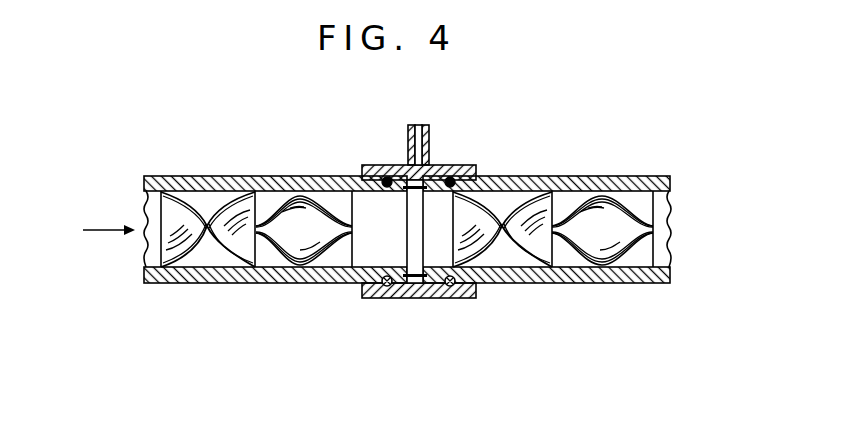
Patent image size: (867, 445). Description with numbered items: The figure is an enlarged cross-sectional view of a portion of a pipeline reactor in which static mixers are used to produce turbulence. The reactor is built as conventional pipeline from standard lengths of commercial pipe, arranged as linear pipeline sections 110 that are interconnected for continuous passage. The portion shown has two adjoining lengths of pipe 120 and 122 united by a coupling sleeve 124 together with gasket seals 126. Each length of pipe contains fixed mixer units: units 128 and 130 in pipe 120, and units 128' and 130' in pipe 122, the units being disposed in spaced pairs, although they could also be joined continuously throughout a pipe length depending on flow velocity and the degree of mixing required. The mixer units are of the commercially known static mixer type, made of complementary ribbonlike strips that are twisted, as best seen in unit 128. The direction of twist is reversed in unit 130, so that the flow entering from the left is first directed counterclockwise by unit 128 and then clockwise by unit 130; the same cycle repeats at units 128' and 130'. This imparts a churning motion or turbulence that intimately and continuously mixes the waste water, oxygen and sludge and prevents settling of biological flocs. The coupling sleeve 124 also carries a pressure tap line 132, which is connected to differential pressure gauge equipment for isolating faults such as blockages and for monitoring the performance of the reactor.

The linear pipeline section 110 is at (210, 290).
The length of pipe 120 is at (270, 143).
The length of pipe 122 is at (653, 158).
The coupling sleeve 124 is at (453, 164).
The gasket seal 126 is at (382, 168).
The mixer unit 128 is at (186, 197).
The mixer unit 128' is at (529, 195).
The mixer unit 130 is at (304, 253).
The mixer unit 130' is at (611, 255).
The pressure tap line 132 is at (407, 152).